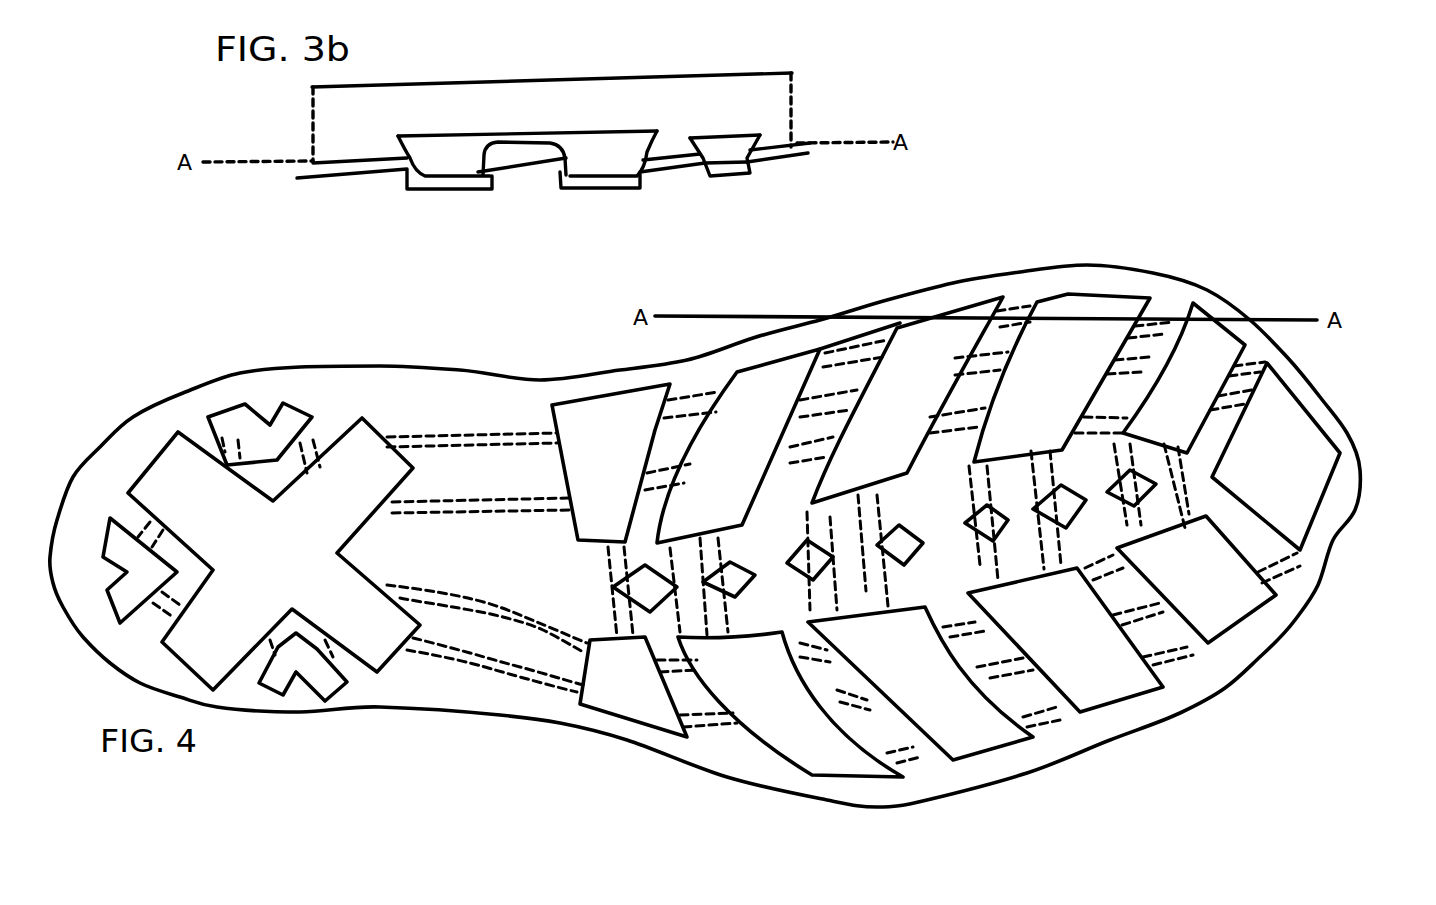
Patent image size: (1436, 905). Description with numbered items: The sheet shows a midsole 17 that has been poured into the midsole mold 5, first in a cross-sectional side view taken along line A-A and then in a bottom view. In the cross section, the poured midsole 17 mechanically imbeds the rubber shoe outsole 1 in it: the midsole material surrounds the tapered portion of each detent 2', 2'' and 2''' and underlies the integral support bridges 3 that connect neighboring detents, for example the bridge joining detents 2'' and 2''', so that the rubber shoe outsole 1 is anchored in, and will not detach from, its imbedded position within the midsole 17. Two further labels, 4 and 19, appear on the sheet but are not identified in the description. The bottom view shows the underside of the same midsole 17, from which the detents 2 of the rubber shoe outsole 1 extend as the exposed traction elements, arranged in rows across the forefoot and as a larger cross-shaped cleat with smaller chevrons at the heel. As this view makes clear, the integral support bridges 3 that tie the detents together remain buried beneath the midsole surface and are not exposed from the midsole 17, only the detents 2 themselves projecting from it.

In FIG. 4, the rubber shoe outsole 1 is at (1323, 495).
In FIG. 4, the detent 2 is at (708, 594).
In FIG. 3B, the detent 2' is at (934, 165).
In FIG. 4, the detent 2' is at (1184, 296).
In FIG. 3B, the detent 2'' is at (818, 175).
In FIG. 4, the detent 2'' is at (1062, 323).
In FIG. 3B, the detent 2''' is at (602, 206).
In FIG. 4, the detent 2''' is at (846, 372).
In FIG. 3B, the integral support bridge 3 is at (523, 134).
In FIG. 4, the integral support bridge 3 is at (1020, 313).
In FIG. 3B, the recess 4 is at (712, 180).
In FIG. 3B, the midsole mold 5 is at (357, 188).
In FIG. 3B, the midsole 17 is at (455, 108).
In FIG. 4, the midsole 17 is at (438, 700).
In FIG. 4, the sole edge portion 19 is at (623, 733).